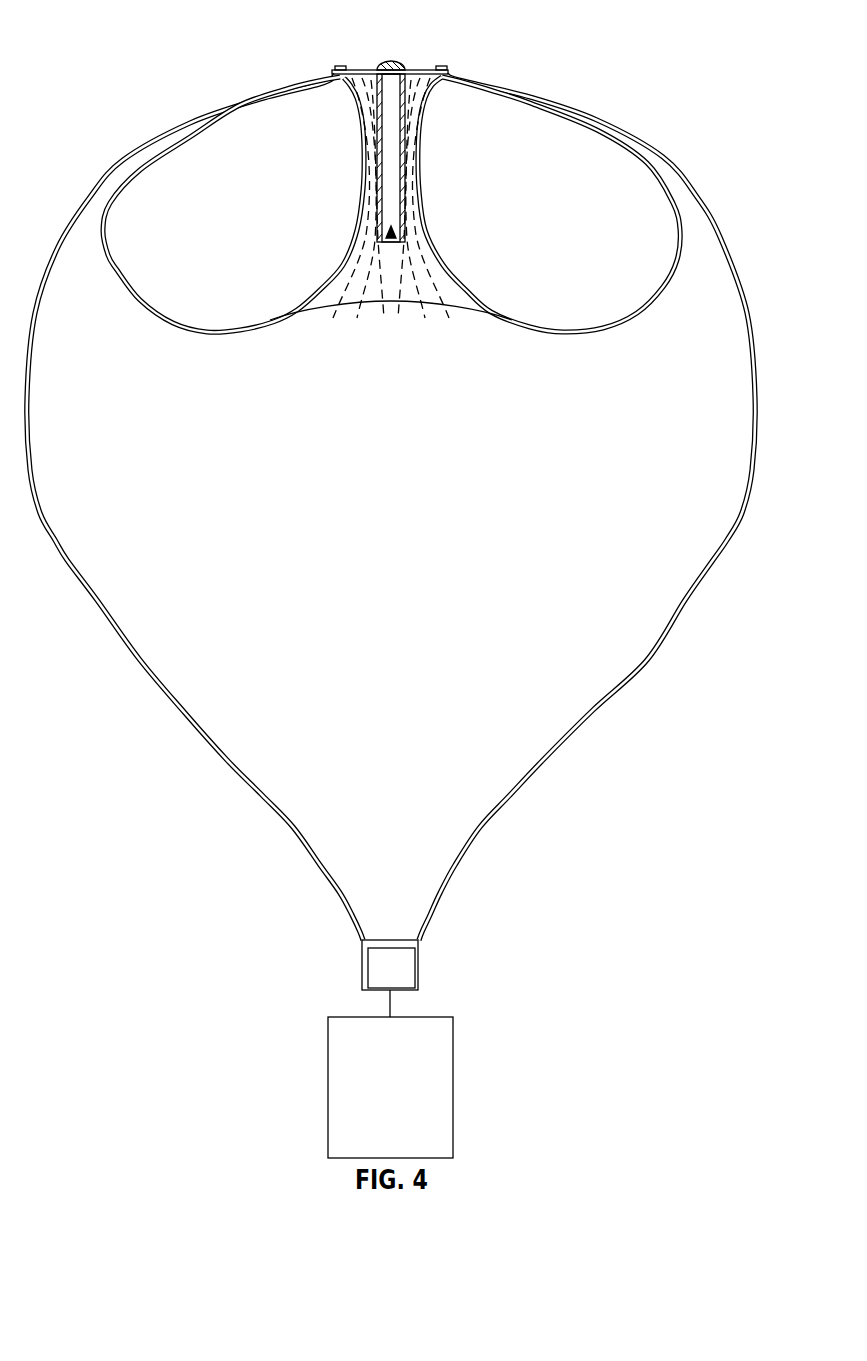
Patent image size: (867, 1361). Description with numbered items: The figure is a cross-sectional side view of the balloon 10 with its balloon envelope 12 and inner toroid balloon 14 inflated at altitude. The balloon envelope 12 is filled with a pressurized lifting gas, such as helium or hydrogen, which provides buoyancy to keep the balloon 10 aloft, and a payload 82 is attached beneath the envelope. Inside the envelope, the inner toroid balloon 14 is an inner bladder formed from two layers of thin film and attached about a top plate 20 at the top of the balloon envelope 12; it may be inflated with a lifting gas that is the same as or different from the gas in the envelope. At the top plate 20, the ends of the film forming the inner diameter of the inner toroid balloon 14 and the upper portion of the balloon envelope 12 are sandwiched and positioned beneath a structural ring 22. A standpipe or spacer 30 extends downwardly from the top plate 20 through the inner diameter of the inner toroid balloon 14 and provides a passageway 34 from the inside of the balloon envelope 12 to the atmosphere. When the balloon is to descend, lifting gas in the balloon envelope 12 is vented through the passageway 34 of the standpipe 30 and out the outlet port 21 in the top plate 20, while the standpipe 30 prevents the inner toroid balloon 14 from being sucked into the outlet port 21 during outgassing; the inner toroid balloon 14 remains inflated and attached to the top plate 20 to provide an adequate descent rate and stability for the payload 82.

The balloon 10 is at (416, 590).
The balloon envelope 12 is at (737, 275).
The inner toroid balloon 14 is at (100, 216).
The top plate 20 is at (341, 68).
The outlet port 21 is at (386, 62).
The structural ring 22 is at (443, 70).
The standpipe or spacer 30 is at (380, 138).
The passageway 34 is at (391, 243).
The payload 82 is at (445, 1060).